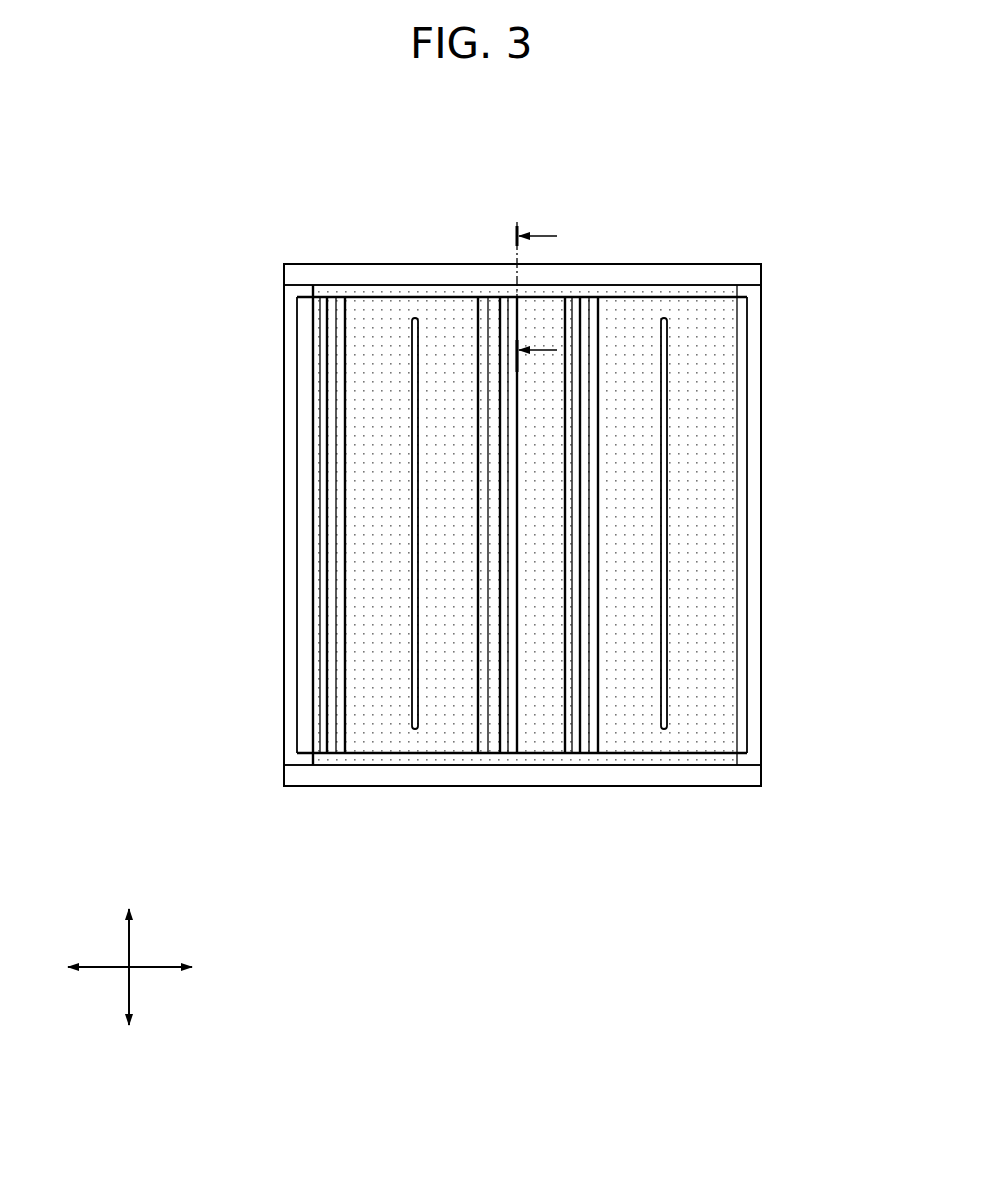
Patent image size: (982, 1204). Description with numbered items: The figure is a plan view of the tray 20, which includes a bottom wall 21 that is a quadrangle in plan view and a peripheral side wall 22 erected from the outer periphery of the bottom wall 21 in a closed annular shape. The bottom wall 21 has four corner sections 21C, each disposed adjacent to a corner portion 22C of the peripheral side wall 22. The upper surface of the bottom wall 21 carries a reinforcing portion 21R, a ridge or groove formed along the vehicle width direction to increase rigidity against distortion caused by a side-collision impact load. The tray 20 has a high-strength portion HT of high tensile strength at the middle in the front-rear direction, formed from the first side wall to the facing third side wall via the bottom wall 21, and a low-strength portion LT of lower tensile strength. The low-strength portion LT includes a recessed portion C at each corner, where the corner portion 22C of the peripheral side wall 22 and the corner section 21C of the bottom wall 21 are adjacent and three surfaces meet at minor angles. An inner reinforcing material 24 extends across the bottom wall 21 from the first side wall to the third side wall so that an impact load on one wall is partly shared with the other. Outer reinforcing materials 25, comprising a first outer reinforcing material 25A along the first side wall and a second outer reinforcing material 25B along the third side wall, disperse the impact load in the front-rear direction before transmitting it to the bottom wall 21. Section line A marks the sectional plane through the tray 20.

The tray 20 is at (680, 190).
The bottom wall 21 is at (625, 320).
The peripheral side wall 22 is at (640, 277).
The corner section 21C is at (292, 297).
The corner portion 22C is at (303, 323).
The reinforcing portion 21R is at (668, 396).
The inner reinforcing material 24 is at (325, 635).
The outer reinforcing material 25 is at (522, 514).
The first outer reinforcing material 25A is at (475, 264).
The second outer reinforcing material 25B is at (445, 790).
The high-strength portion HT is at (455, 318).
The low-strength portion LT is at (300, 377).
The recessed portion C is at (345, 172).
The section line A- A is at (537, 300).